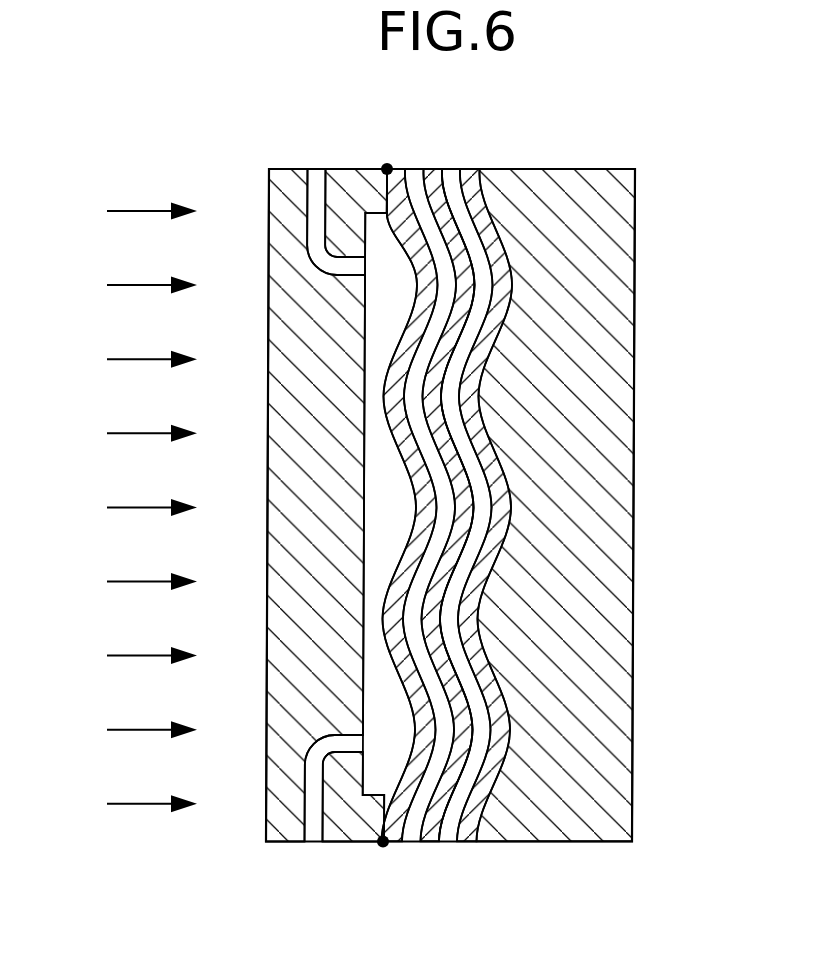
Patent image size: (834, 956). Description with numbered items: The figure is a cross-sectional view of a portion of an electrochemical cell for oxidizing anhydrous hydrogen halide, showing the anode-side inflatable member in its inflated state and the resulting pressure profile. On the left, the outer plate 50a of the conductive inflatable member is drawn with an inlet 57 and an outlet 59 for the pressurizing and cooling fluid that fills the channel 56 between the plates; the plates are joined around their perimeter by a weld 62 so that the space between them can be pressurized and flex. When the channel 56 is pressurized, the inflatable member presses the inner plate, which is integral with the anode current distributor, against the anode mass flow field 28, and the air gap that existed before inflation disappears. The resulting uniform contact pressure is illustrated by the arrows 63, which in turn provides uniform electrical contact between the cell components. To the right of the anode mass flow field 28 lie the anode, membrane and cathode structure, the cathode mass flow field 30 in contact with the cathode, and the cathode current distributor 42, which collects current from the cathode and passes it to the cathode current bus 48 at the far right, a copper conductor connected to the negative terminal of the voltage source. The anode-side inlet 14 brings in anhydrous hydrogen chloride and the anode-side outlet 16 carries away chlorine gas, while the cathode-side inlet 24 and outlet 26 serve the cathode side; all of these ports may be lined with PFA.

The anode-side inlet 14 is at (410, 843).
The anode-side outlet 16 is at (413, 168).
The cathode-side inlet 24 is at (452, 843).
The cathode-side outlet 26 is at (452, 168).
The anode mass flow field 28 is at (443, 497).
The cathode mass flow field 30 is at (465, 353).
The cathode current distributor 42 is at (505, 299).
The cathode current bus 48 is at (573, 170).
The plate 50a is at (288, 168).
The channel 56 is at (388, 708).
The inlet 57 is at (307, 802).
The outlet 59 is at (305, 208).
The weld 62 is at (387, 169).
The arrows 63 is at (133, 210).